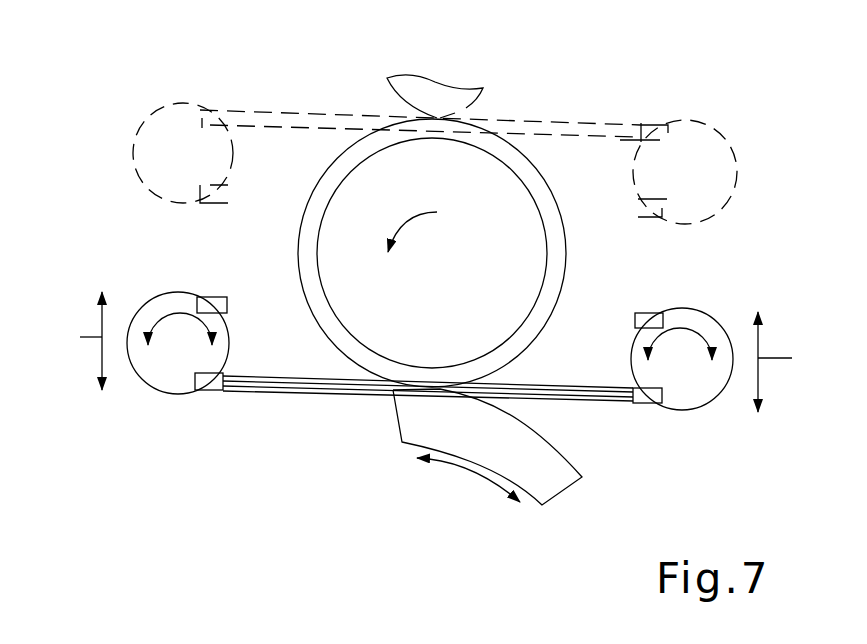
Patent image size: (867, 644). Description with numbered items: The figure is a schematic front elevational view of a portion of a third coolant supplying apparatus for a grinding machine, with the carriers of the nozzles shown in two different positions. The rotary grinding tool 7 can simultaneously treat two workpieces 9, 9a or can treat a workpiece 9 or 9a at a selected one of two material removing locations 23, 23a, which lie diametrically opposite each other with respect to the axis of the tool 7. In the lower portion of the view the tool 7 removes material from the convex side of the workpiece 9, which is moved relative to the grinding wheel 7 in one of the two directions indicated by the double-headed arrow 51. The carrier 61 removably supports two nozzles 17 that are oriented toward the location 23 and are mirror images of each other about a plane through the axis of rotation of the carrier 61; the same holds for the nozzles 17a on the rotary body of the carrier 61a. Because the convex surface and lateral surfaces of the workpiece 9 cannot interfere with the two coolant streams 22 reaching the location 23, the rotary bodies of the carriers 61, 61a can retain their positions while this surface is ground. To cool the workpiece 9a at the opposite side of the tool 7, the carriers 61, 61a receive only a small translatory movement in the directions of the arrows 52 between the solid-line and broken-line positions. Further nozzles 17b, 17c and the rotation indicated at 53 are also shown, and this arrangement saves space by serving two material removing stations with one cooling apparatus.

The grinding tool 7 is at (508, 198).
The workpiece 9 is at (562, 477).
The workpiece 9a is at (442, 97).
The nozzles 17 is at (647, 318).
The nozzles 17a is at (215, 300).
The guide block 17b is at (648, 403).
The guide block 17c is at (208, 390).
The streams 22 is at (278, 380).
The location 23 is at (380, 402).
The location 23a is at (377, 112).
The double-headed arrow 51 is at (473, 470).
The arrows 52 is at (436, 352).
The roller rotation direction 53 is at (168, 312).
The carrier 61 is at (717, 312).
The carrier 61a is at (152, 395).